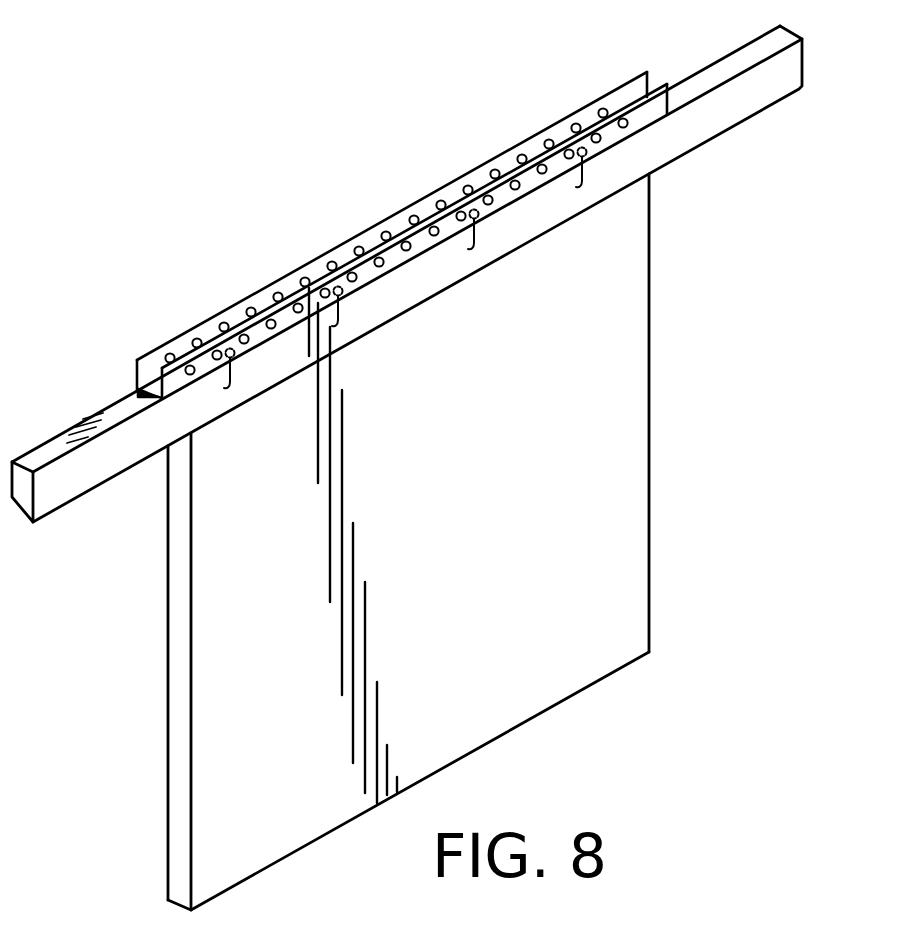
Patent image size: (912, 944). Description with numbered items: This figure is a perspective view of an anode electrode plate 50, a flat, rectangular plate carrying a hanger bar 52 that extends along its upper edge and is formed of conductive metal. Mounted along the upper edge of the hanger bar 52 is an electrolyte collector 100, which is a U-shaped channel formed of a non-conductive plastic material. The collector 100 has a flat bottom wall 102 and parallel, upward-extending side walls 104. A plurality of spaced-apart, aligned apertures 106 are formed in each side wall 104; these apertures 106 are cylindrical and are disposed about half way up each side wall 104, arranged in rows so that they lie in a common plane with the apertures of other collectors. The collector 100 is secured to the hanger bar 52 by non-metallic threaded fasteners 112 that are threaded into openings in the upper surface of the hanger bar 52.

The anode plate 50 is at (618, 520).
The hanger bar 52 is at (730, 108).
The electrolyte collector 100 is at (391, 206).
The bottom wall 102 is at (138, 392).
The side wall 104 is at (550, 160).
The aperture 106 is at (268, 323).
The threaded fastener 112 is at (233, 385).